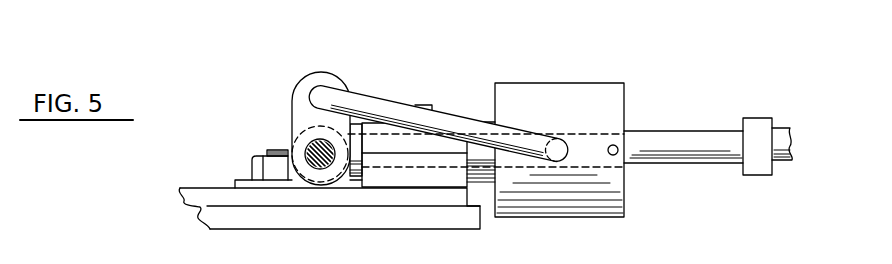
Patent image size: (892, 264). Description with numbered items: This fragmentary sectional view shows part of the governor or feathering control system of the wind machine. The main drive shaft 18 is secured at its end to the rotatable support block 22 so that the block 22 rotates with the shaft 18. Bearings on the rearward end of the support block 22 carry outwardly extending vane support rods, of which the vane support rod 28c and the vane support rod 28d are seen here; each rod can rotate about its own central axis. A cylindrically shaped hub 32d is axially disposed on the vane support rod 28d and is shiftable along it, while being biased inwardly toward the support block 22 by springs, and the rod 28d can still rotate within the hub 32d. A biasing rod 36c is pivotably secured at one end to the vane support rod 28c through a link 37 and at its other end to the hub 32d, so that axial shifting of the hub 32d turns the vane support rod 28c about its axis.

The main drive shaft 18 is at (277, 148).
The rotatable support block 22 is at (425, 218).
The vane support rod 28c is at (311, 147).
The vane support rod 28d is at (690, 137).
The hub 32d is at (582, 92).
The biasing rod 36c is at (383, 97).
The link 37 is at (314, 71).